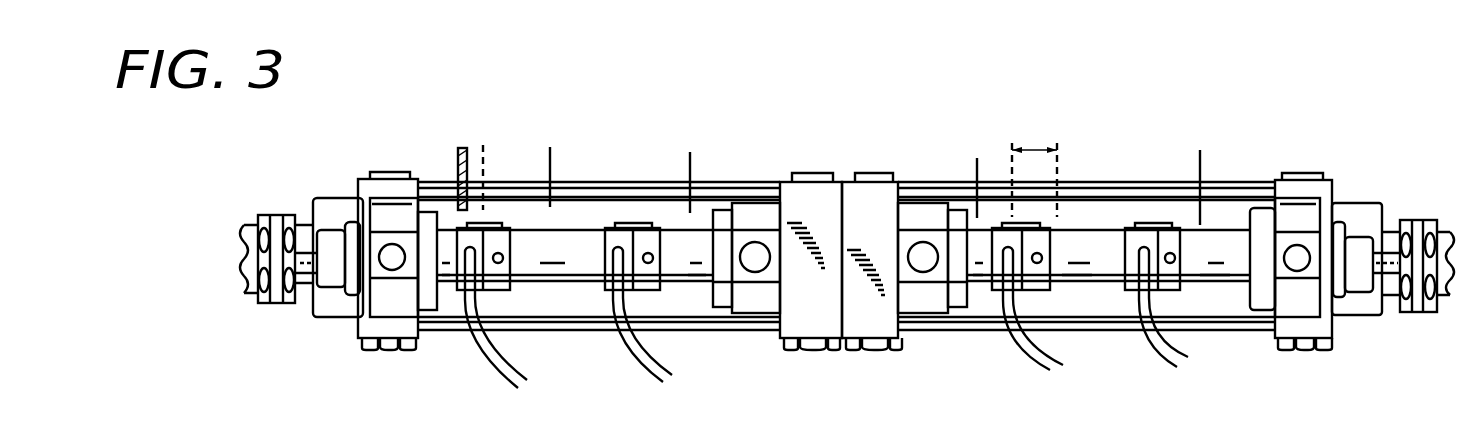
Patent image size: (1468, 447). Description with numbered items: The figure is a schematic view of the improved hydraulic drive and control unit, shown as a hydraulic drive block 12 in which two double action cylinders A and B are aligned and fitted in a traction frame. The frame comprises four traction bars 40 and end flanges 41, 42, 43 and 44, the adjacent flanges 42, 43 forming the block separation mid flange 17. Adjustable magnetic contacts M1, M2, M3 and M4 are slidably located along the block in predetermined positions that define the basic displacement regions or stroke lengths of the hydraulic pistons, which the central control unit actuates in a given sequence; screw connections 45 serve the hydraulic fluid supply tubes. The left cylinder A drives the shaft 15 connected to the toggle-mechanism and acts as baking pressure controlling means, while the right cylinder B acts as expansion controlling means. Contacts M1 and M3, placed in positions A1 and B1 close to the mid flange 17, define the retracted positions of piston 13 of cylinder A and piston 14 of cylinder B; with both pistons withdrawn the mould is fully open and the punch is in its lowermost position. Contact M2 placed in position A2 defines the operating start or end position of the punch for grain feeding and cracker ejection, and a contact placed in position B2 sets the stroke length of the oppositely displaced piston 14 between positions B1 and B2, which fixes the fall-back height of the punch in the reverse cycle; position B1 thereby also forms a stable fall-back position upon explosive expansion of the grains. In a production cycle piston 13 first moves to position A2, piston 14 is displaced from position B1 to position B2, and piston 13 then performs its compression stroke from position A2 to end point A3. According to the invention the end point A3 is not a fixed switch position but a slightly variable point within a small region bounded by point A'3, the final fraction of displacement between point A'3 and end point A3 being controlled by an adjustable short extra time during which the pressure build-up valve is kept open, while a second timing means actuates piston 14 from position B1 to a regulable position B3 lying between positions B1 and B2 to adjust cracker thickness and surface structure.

The hydraulic drive block 12 is at (752, 353).
The piston of cylinder A 13 is at (604, 252).
The piston of cylinder B 14 is at (1050, 257).
The drive shaft 15 is at (330, 200).
The mid flange 17 is at (843, 355).
The traction bars 40 is at (747, 193).
The end flange 41 is at (387, 172).
The end flange 42 is at (813, 173).
The end flange 43 is at (873, 173).
The end flange 44 is at (1303, 173).
The screw connections 45 is at (393, 285).
The left cylinder A is at (575, 192).
The retracted position of piston 13 A1 is at (691, 164).
The operating start position of piston 13 A2 is at (561, 160).
The end point of compression stroke A3 is at (455, 158).
The boundary of end region A'3 is at (506, 161).
The right cylinder B is at (1085, 213).
The retracted position of piston 14 B1 is at (973, 167).
The extended position of piston 14 B2 is at (1203, 169).
The regulable position of piston 14 B3 is at (1034, 165).
The magnetic contact M1 is at (657, 338).
The magnetic contact M2 is at (508, 330).
The magnetic contact M3 is at (1039, 333).
The magnetic contact M4 is at (1170, 317).